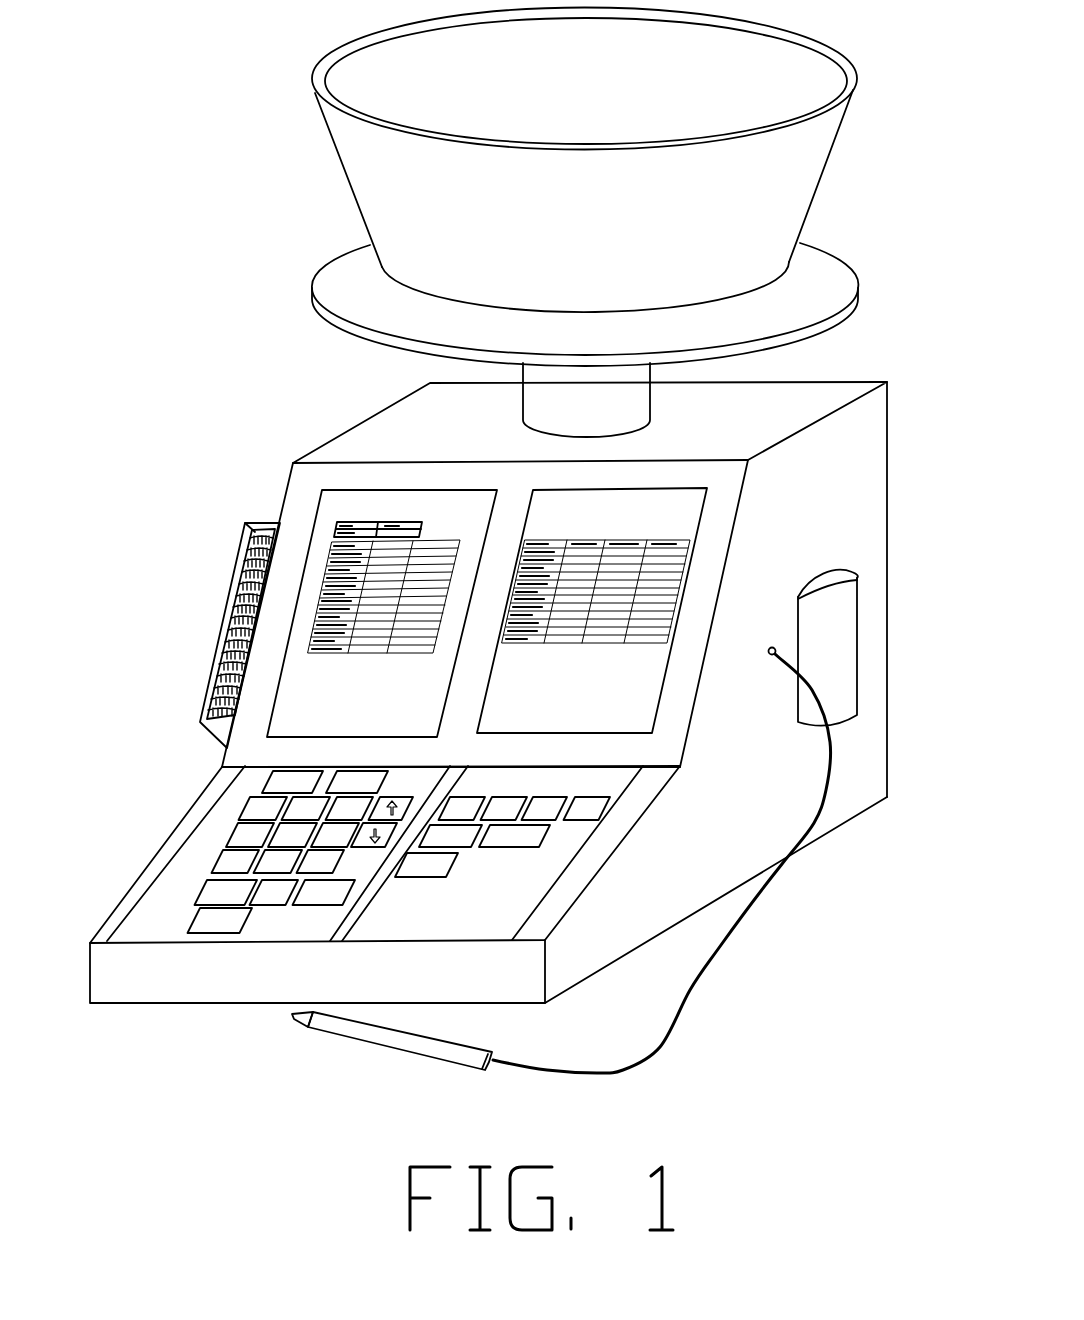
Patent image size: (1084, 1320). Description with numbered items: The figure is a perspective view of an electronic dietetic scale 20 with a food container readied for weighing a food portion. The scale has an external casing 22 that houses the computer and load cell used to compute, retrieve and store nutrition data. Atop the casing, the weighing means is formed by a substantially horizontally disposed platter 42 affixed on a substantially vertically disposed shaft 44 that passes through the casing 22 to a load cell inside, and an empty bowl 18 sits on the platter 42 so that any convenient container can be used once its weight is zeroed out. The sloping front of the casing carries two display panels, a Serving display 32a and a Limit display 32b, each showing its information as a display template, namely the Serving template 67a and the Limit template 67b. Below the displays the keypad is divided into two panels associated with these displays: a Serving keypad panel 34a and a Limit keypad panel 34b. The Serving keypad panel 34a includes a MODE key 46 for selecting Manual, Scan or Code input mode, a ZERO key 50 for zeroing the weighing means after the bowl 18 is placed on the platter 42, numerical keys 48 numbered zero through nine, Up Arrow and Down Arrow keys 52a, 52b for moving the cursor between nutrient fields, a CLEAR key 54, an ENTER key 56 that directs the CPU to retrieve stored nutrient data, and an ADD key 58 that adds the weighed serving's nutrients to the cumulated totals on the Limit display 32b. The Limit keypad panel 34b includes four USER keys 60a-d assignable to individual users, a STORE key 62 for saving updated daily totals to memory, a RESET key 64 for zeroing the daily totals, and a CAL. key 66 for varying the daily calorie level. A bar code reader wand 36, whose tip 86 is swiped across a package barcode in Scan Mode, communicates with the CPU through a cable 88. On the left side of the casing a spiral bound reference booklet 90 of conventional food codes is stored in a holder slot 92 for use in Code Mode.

The bowl 18 is at (810, 185).
The platter 42 is at (833, 285).
The shaft 44 is at (627, 404).
The external casing 22 is at (373, 418).
The dietetic scale 20 is at (804, 934).
The Serving display 32a is at (382, 603).
The Limit display 32b is at (592, 600).
The Serving template 67a is at (372, 653).
The Limit template 67b is at (595, 638).
The reference booklet 90 is at (228, 597).
The holder slot 92 is at (248, 523).
The Serving keypad panel 34a is at (256, 859).
The Limit keypad panel 34b is at (534, 841).
The MODE key 46 is at (298, 769).
The ZERO key 50 is at (340, 767).
The numerical keys 48 is at (245, 822).
The Up Arrow key 52a is at (390, 795).
The Down Arrow key 52b is at (360, 848).
The CLEAR key 54 is at (177, 908).
The ENTER key 56 is at (292, 905).
The ADD key 58 is at (222, 935).
The USER keys 60a-d is at (590, 797).
The STORE key 62 is at (458, 843).
The RESET key 64 is at (512, 850).
The CAL. key 66 is at (437, 875).
The cable 88 is at (681, 1022).
The bar code reader wand 36 is at (393, 1043).
The tip 86 is at (290, 1020).